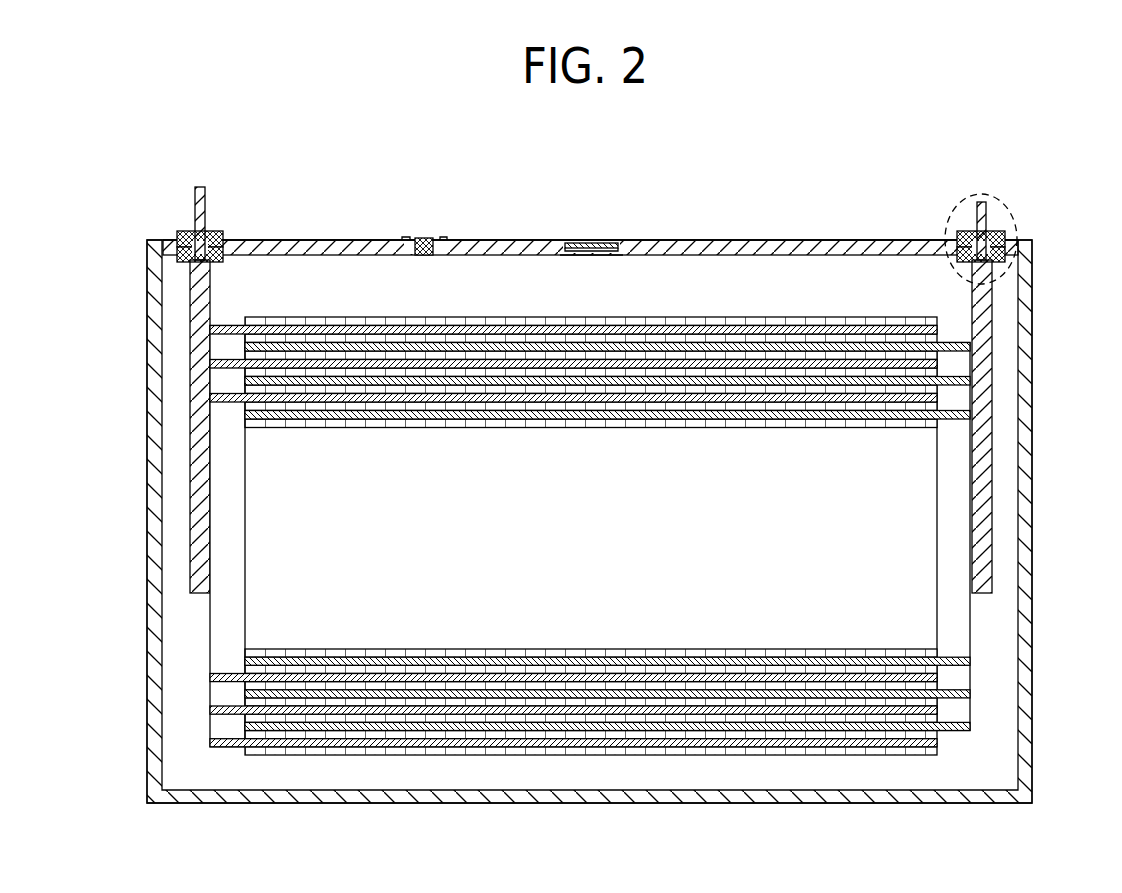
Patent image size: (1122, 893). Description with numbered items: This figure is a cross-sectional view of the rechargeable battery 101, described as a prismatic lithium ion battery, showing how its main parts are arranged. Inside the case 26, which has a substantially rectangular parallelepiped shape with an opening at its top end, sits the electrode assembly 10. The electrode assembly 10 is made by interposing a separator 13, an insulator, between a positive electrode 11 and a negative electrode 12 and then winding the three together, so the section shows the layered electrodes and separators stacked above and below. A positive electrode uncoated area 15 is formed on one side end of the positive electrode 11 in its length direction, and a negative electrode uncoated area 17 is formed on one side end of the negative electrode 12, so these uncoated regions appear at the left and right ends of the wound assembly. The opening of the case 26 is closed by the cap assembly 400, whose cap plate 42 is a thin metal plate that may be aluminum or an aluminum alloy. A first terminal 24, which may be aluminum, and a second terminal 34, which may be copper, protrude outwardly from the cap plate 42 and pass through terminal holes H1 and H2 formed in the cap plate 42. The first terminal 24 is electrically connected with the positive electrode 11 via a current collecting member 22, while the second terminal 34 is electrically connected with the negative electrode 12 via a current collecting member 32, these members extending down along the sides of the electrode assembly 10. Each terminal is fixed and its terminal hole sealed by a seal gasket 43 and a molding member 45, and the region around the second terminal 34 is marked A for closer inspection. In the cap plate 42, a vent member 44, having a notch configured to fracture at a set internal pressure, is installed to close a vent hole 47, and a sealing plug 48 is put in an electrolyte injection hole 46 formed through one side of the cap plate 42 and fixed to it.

The rechargeable battery 101 is at (692, 138).
The electrode assembly 10 is at (740, 612).
The positive electrode 11 is at (372, 742).
The negative electrode 12 is at (432, 724).
The separator 13 is at (592, 717).
The positive electrode uncoated area 15 is at (220, 745).
The negative electrode uncoated area 17 is at (955, 730).
The current collecting member 22 is at (200, 322).
The first terminal 24 is at (195, 194).
The case 26 is at (1025, 580).
The current collecting member 32 is at (987, 320).
The second terminal 34 is at (987, 205).
The cap assembly 400 is at (510, 238).
The cap plate 42 is at (677, 247).
The seal gasket 43 is at (188, 243).
The vent member 44 is at (610, 240).
The molding member 45 is at (225, 240).
The electrolyte injection hole 46 is at (423, 242).
The vent hole 47 is at (592, 256).
The sealing plug 48 is at (418, 238).
The terminal hole H1 is at (203, 242).
The terminal hole H2 is at (990, 228).
The enlarged region A is at (1000, 197).